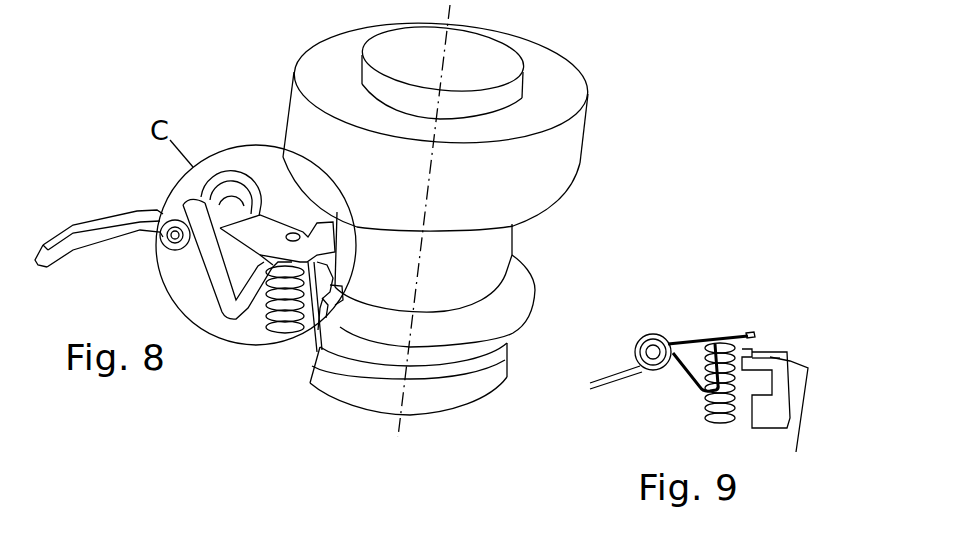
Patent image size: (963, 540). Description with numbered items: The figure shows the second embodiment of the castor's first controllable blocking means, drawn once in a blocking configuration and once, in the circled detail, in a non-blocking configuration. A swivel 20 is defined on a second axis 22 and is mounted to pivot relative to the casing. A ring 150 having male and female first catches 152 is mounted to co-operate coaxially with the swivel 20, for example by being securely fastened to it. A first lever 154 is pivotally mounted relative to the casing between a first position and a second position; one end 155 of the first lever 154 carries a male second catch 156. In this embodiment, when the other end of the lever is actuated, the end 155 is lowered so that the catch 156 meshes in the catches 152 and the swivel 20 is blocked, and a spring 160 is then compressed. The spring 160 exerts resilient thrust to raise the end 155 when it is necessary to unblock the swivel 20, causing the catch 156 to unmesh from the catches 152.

In FIG. 8, the swivel 20 is at (533, 187).
In FIG. 8, the second axis 22 is at (442, 69).
In FIG. 8, the ring 150 is at (513, 303).
In FIG. 9, the ring 150 is at (799, 424).
In FIG. 8, the first catches 152 is at (318, 332).
In FIG. 9, the first catches 152 is at (750, 348).
In FIG. 8, the first lever 154 is at (127, 218).
In FIG. 9, the first lever 154 is at (642, 380).
In FIG. 8, the end of the first lever 155 is at (306, 236).
In FIG. 9, the end of the first lever 155 is at (738, 334).
In FIG. 8, the male second catch 156 is at (243, 272).
In FIG. 9, the male second catch 156 is at (752, 333).
In FIG. 8, the spring 160 is at (268, 340).
In FIG. 9, the spring 160 is at (708, 408).